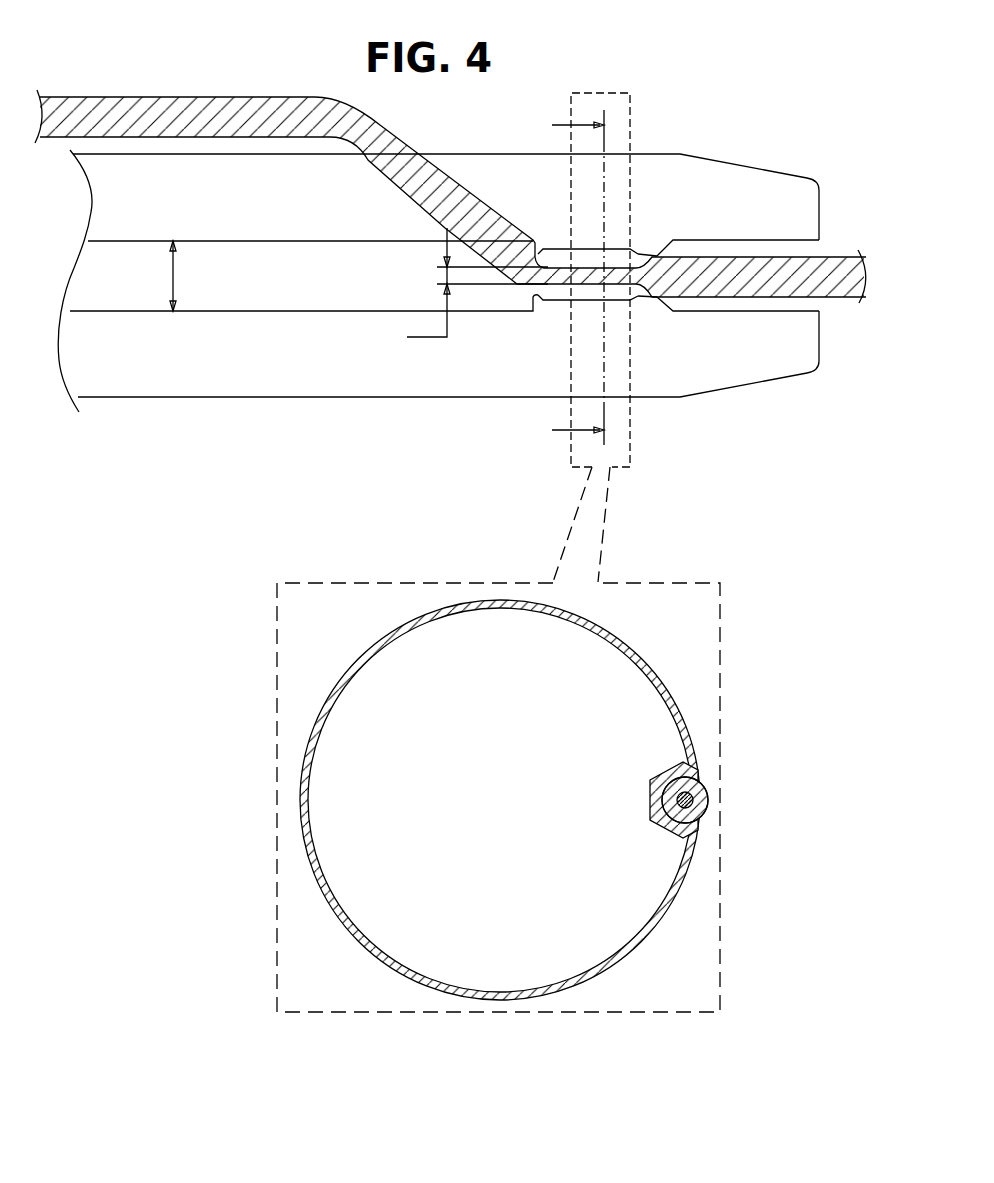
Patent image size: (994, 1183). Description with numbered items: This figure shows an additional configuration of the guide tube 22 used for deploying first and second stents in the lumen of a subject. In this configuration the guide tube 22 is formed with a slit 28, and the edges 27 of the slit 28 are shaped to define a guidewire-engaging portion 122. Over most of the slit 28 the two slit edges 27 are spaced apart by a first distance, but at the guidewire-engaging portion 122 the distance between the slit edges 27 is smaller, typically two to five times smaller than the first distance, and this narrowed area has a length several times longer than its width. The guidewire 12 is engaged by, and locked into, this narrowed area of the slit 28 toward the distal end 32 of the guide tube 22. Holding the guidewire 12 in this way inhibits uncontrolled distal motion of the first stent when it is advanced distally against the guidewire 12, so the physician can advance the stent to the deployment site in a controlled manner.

The guide tube 22 is at (155, 78).
The guidewire 12 is at (234, 100).
The slit 28 is at (100, 251).
The slit edges 27 is at (306, 241).
The distal end 32 is at (858, 237).
The guidewire-engaging portion 122 is at (593, 247).